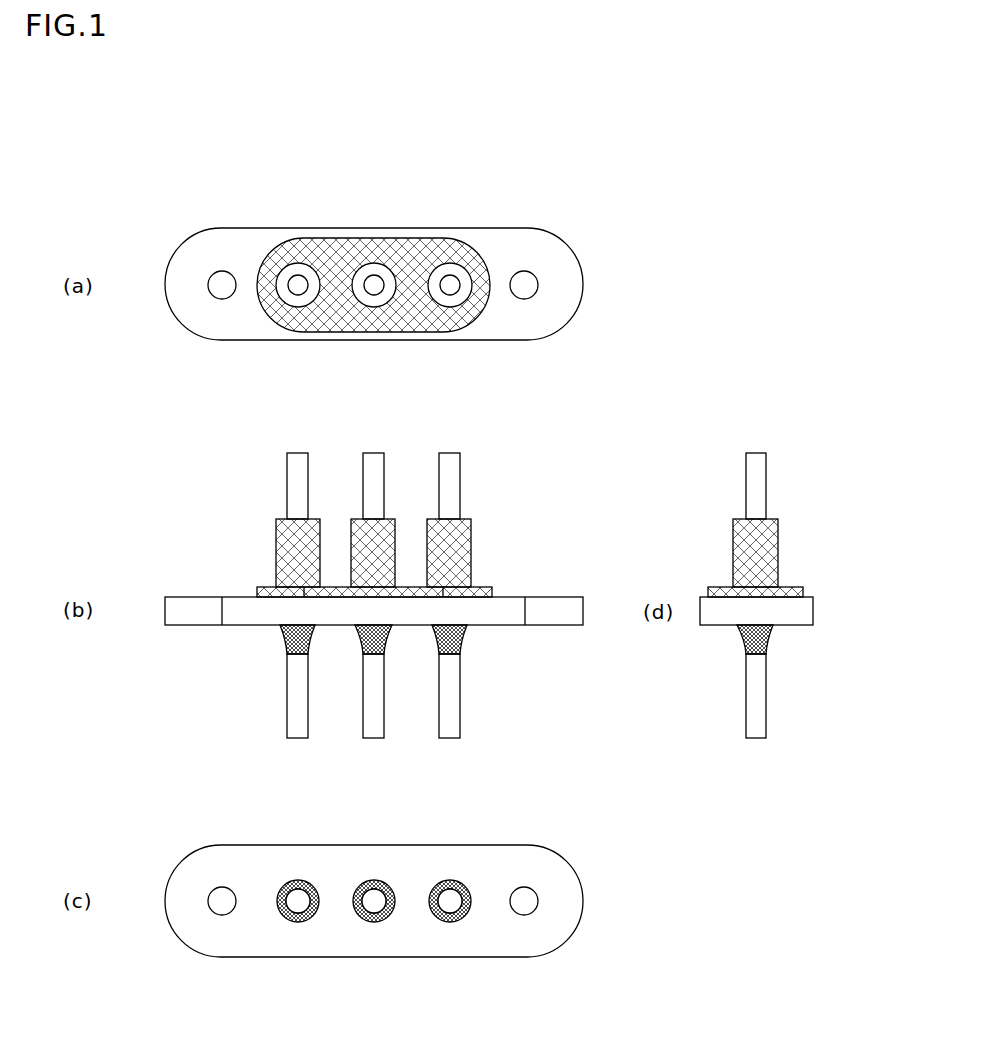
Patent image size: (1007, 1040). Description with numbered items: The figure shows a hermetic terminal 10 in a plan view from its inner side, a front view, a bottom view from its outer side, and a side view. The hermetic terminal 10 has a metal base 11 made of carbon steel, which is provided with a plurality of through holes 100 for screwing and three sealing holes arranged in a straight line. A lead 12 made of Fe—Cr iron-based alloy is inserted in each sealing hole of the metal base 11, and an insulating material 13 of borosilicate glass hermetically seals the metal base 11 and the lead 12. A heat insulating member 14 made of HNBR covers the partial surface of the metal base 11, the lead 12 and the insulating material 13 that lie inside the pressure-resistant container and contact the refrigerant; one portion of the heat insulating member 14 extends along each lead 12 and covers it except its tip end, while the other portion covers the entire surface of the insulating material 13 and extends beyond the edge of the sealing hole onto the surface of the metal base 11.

The hermetic terminal 10 is at (194, 209).
The metal base 11 is at (195, 298).
The lead 12 is at (298, 283).
The insulating material 13 is at (280, 636).
The heat insulating member 14 is at (337, 257).
The through hole 100 is at (222, 285).